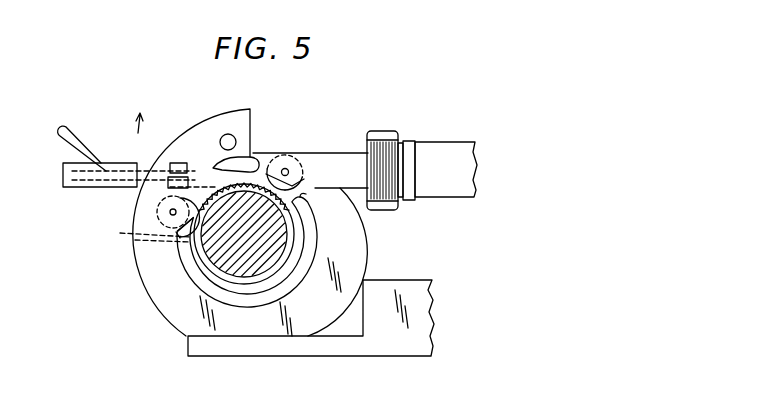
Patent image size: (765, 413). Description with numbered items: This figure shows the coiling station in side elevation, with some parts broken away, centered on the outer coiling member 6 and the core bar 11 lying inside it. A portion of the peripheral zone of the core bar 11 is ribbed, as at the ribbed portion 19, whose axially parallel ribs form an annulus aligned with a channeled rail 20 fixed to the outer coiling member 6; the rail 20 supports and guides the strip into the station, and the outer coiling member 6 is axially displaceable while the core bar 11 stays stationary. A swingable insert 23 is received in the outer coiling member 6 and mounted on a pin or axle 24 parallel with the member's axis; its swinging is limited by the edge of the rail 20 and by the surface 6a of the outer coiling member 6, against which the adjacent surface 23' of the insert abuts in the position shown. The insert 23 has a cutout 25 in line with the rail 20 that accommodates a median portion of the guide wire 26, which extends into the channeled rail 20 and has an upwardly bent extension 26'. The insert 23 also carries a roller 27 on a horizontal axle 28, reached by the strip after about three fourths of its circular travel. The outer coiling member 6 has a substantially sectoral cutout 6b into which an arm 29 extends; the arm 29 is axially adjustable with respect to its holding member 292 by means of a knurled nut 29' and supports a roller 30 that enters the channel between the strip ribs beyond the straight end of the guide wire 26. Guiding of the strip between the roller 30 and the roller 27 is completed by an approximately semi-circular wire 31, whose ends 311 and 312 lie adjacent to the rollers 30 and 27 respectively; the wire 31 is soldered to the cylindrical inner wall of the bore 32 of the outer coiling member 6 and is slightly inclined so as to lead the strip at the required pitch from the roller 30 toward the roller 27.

The outer coiling member 6 is at (357, 258).
The surface of outer coiling member 6a is at (133, 238).
The sectoral cutout 6b is at (285, 161).
The core bar 11 is at (215, 260).
The ribbed portion 19 is at (227, 190).
The channeled rail 20 is at (68, 172).
The insert 23 is at (193, 169).
The surface of insert 23' is at (141, 235).
The pin or axle 24 is at (230, 142).
The cutout 25 is at (183, 180).
The guide wire 26 is at (151, 140).
The upwardly bent extension 26' is at (82, 139).
The roller 27 is at (175, 231).
The horizontal axle 28 is at (170, 212).
The arm 29 is at (310, 145).
The knurled nut 29' is at (394, 158).
The holding member 292 is at (452, 150).
The roller 30 is at (290, 184).
The semi-circular wire 31 is at (317, 232).
The end of semi-circular wire 311 is at (315, 203).
The end of semi-circular wire 312 is at (191, 250).
The cylindrical opening or bore 32 is at (278, 282).